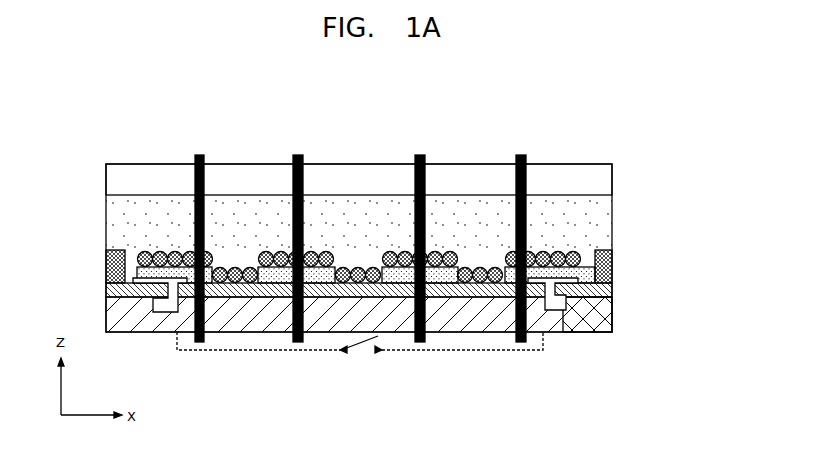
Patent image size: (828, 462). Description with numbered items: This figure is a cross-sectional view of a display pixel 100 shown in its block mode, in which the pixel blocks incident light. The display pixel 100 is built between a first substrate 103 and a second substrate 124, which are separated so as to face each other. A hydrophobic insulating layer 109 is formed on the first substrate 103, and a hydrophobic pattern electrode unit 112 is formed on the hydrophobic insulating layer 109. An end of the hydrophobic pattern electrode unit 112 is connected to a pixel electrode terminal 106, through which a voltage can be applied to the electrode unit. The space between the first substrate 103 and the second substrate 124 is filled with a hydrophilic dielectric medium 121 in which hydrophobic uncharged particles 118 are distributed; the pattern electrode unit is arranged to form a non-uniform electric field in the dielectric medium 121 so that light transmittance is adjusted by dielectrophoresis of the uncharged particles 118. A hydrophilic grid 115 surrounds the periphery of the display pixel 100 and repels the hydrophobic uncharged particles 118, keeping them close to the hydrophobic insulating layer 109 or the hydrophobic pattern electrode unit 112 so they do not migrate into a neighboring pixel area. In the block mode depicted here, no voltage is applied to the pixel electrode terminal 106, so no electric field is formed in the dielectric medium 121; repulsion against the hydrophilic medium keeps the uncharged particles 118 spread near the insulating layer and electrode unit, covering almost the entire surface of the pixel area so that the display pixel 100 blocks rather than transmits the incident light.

The display pixel 100 is at (578, 135).
The second substrate 124 is at (612, 186).
The dielectric medium 121 is at (612, 216).
The uncharged particles 118 is at (580, 251).
The hydrophilic grid 115 is at (612, 268).
The hydrophobic insulating layer 109 is at (612, 290).
The first substrate 103 is at (612, 312).
The pixel electrode terminal 106 is at (560, 318).
The hydrophobic pattern electrode unit 112 is at (613, 328).